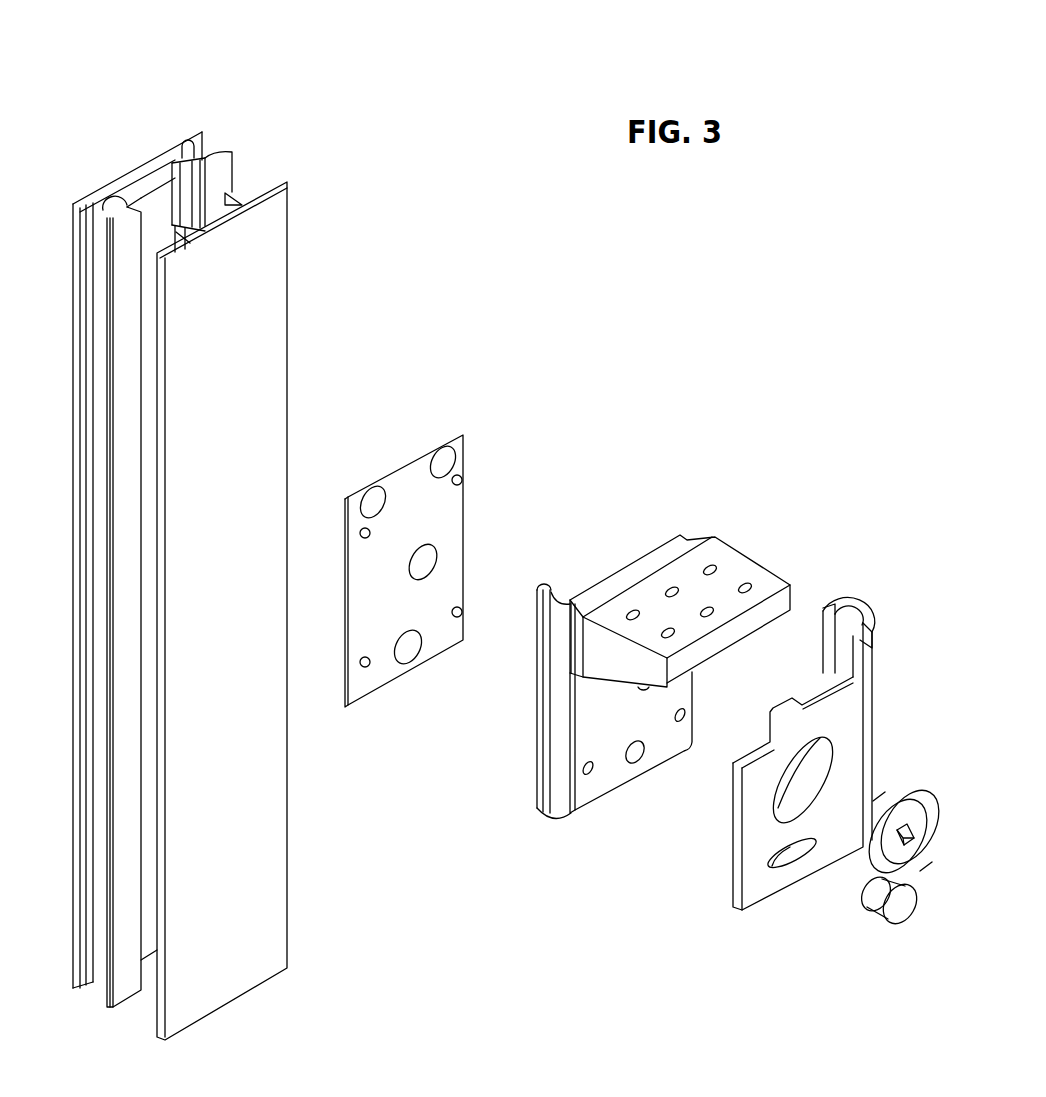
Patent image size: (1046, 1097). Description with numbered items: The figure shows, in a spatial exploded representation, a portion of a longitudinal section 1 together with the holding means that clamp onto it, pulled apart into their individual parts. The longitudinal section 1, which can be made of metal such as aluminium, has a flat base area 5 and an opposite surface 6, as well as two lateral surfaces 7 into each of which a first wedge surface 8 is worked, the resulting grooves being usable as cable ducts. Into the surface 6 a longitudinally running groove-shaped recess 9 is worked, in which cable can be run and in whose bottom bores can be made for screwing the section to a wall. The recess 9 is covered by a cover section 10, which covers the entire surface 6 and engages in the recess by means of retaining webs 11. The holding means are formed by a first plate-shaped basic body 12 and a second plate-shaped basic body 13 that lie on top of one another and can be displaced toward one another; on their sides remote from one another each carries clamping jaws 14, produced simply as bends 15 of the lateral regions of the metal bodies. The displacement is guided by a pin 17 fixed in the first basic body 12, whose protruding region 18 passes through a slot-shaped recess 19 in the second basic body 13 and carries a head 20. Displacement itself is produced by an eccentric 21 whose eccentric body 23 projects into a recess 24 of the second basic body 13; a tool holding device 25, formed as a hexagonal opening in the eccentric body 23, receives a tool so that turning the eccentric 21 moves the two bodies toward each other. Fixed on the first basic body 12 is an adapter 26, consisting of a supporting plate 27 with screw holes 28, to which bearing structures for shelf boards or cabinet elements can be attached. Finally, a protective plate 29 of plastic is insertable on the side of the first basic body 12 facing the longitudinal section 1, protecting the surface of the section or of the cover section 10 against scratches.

The longitudinal section 1 is at (163, 132).
The base area 5 is at (122, 168).
The surface 6 is at (232, 166).
The lateral surfaces 7 is at (70, 230).
The first wedge surface 8 is at (103, 208).
The groove-shaped recess 9 is at (153, 173).
The cover section 10 is at (265, 256).
The connecting portion 11 is at (231, 197).
The first plate-shaped basic body 12 is at (590, 787).
The second plate-shaped basic body 13 is at (858, 698).
The clamping jaws 14 is at (545, 706).
The bends 15 is at (547, 820).
The pin 17 is at (870, 924).
The protruding region 18 is at (900, 883).
The slot-shaped recess 19 is at (792, 862).
The head 20 is at (900, 910).
The eccentric 21 is at (905, 785).
The eccentric body 23 is at (920, 815).
The recess 24 is at (800, 787).
The tool holding device 25 is at (888, 870).
The adapter 26 is at (736, 547).
The supporting plate 27 is at (781, 608).
The screw holes 28 is at (749, 588).
The protective plate 29 is at (412, 485).